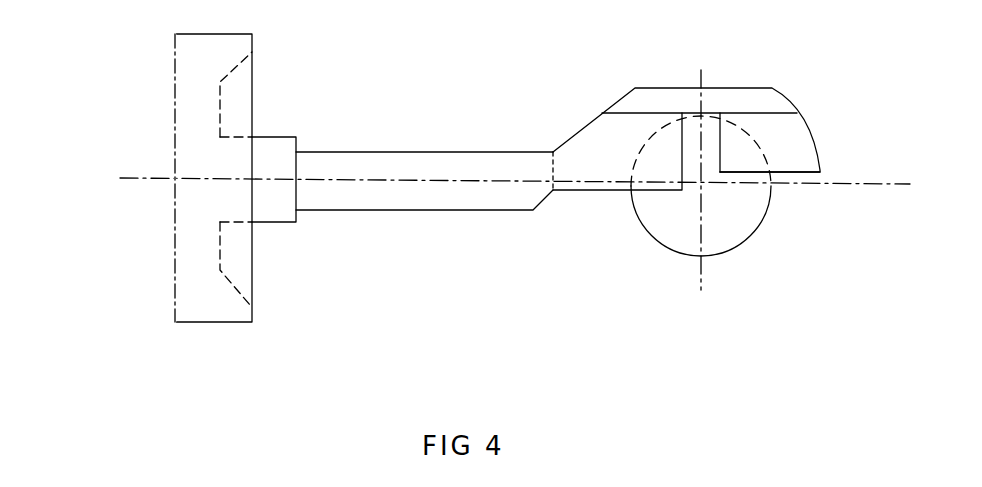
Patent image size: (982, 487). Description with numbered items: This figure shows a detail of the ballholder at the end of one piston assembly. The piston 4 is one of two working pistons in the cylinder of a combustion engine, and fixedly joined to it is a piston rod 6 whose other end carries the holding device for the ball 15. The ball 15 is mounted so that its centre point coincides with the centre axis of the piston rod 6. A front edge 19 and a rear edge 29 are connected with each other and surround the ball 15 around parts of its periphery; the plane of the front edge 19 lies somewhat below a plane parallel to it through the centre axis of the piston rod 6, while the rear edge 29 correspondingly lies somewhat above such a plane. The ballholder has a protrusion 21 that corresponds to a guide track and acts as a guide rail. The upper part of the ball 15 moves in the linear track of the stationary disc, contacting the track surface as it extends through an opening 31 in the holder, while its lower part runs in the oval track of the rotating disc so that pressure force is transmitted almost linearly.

The piston 4 is at (172, 270).
The piston rod 6 is at (408, 212).
The ball 15 is at (682, 238).
The front edge 19 is at (808, 173).
The protrusion 21 is at (657, 89).
The rear edge 29 is at (596, 192).
The opening 31 is at (705, 132).